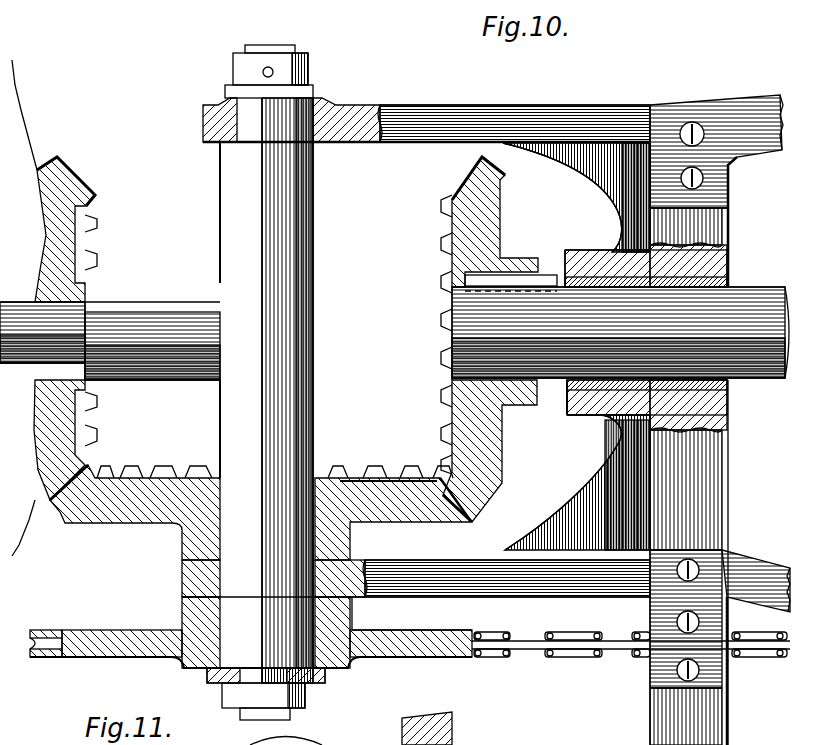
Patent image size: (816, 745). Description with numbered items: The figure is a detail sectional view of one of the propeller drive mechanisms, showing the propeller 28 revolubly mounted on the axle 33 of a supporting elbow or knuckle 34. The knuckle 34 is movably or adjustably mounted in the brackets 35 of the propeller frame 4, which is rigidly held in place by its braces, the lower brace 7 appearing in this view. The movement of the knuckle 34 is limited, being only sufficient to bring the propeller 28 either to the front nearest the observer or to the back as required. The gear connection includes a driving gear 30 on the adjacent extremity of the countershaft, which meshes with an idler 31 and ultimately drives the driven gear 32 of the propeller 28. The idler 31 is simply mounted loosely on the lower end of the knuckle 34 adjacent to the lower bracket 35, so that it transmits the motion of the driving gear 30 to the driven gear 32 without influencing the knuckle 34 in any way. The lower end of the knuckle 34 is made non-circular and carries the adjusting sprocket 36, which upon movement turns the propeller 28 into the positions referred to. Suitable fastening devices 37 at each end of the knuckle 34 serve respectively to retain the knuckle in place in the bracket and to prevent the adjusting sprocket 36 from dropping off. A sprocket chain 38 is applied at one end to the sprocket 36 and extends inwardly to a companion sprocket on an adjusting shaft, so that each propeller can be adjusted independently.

The propeller frame 4 is at (745, 110).
The lower brace 7 is at (750, 563).
The propeller 28 is at (20, 104).
The driving gear 30 is at (494, 228).
The idler 31 is at (370, 488).
The driven gear 32 is at (82, 240).
The axle 33 is at (76, 312).
The knuckle 34 is at (314, 311).
The bracket 35 is at (449, 106).
The adjusting sprocket 36 is at (391, 656).
The fastening device 37 is at (306, 80).
The sprocket chain 38 is at (584, 633).